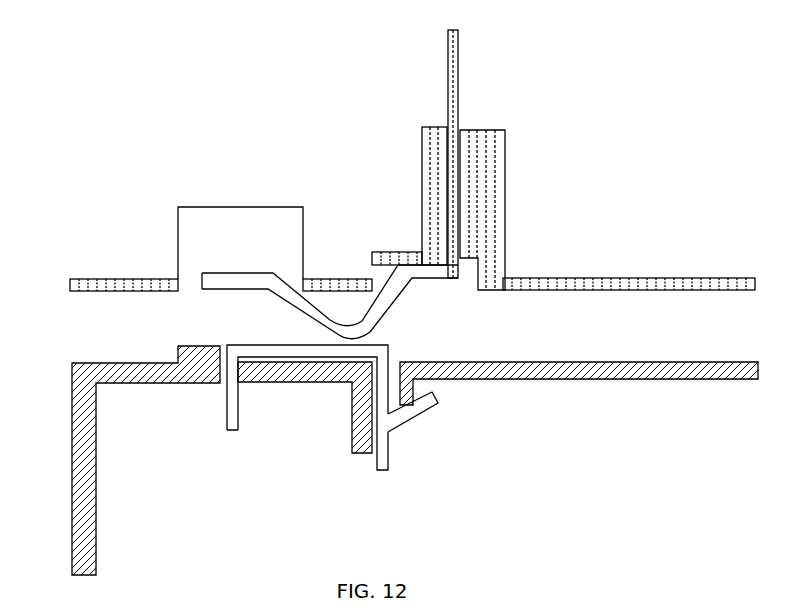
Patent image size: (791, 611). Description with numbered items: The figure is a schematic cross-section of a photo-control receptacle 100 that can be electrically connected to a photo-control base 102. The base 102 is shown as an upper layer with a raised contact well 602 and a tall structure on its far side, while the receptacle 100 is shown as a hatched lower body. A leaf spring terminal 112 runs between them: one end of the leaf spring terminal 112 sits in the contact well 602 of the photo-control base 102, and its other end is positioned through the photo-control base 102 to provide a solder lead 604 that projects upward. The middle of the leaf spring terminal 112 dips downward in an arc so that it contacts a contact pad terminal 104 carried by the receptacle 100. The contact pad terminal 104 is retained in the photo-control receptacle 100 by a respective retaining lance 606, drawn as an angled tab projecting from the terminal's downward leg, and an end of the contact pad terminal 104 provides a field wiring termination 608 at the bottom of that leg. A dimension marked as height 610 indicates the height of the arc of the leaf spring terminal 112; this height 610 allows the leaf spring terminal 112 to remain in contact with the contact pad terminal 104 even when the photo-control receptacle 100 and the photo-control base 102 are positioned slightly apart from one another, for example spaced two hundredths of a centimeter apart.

The photo-control receptacle 100 is at (58, 360).
The photo-control base 102 is at (92, 252).
The contact pad terminal 104 is at (397, 352).
The leaf spring terminal 112 is at (406, 300).
The contact well 602 is at (200, 217).
The solder lead 604 is at (437, 97).
The retaining lance 606 is at (427, 425).
The field wiring termination 608 is at (398, 470).
The height 610 is at (493, 293).